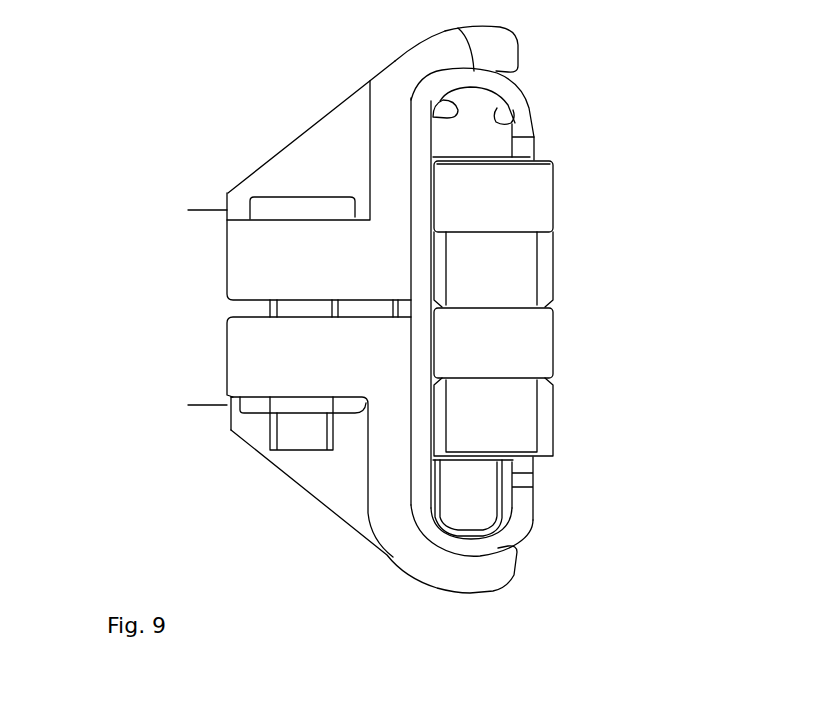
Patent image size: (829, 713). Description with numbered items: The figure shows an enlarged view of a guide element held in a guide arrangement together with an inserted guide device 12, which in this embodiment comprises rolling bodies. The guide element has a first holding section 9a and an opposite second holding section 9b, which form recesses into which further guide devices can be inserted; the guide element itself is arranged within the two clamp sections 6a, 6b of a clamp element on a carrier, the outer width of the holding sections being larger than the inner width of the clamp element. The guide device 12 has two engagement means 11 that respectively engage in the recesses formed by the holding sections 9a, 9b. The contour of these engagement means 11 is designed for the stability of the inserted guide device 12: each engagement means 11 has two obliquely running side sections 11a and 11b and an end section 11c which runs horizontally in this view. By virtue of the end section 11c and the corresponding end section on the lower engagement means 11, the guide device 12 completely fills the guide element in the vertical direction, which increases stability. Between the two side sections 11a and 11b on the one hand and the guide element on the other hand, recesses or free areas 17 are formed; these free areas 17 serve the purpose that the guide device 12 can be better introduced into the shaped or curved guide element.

The clamp section 6a is at (482, 42).
The clamp section 6b is at (493, 567).
The first holding section 9a is at (497, 80).
The second holding section 9b is at (510, 521).
The engagement means 11 is at (478, 125).
The side section 11a is at (433, 118).
The side section 11b is at (480, 124).
The end section 11c is at (433, 35).
The guide device 12 is at (575, 340).
The free area 17 is at (411, 97).